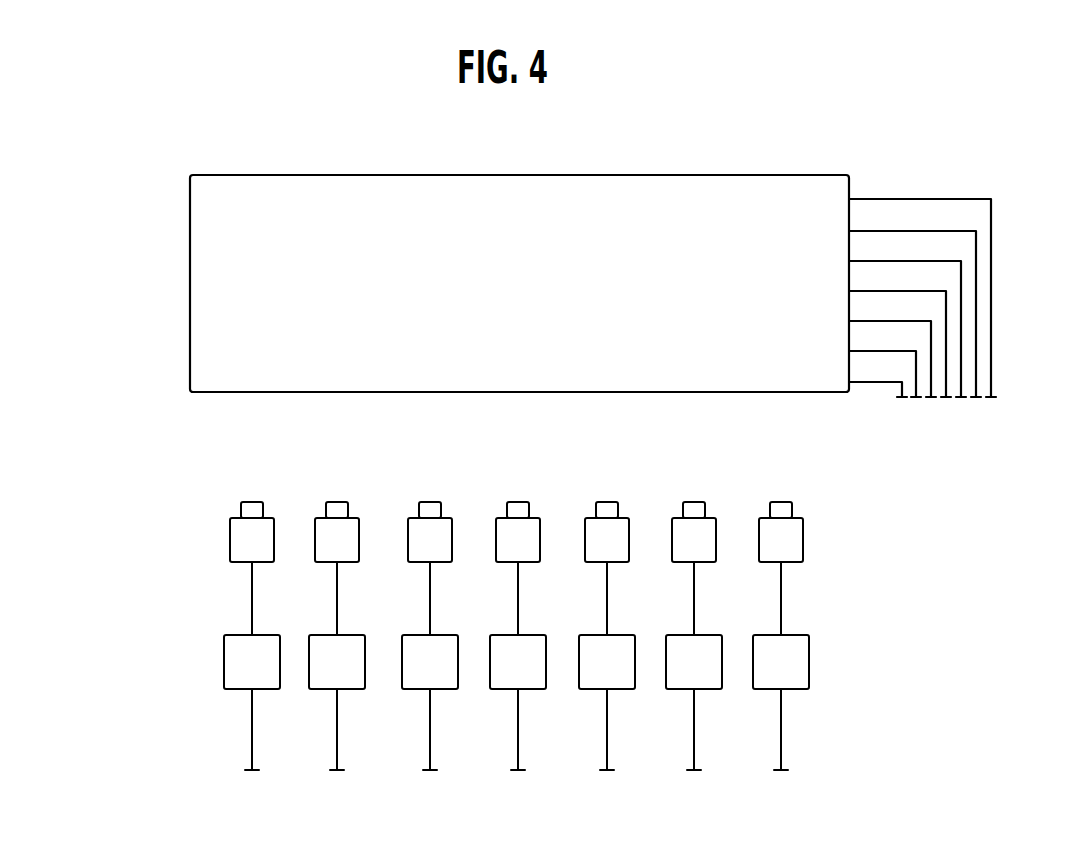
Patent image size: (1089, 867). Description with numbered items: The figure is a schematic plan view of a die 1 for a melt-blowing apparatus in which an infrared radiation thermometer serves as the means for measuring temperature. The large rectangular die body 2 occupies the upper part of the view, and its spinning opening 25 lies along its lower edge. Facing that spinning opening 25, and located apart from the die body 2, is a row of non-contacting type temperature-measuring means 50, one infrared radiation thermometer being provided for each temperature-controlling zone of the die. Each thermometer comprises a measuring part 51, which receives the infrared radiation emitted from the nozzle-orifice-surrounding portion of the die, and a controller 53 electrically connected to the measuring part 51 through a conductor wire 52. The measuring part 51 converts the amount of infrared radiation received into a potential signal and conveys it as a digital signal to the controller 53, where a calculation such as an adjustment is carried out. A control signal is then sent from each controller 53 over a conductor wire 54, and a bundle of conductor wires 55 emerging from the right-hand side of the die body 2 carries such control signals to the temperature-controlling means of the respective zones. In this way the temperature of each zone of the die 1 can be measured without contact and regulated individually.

The die 1 is at (858, 500).
The die body 2 is at (773, 187).
The spinning opening 25 is at (248, 396).
The non-contacting type temperature-measuring means 50 is at (187, 636).
The measuring part 51 is at (236, 541).
The conductor wire 52 is at (252, 596).
The controller 53 is at (230, 668).
The conductor wire 54 is at (250, 728).
The conductor wires 55 is at (991, 357).